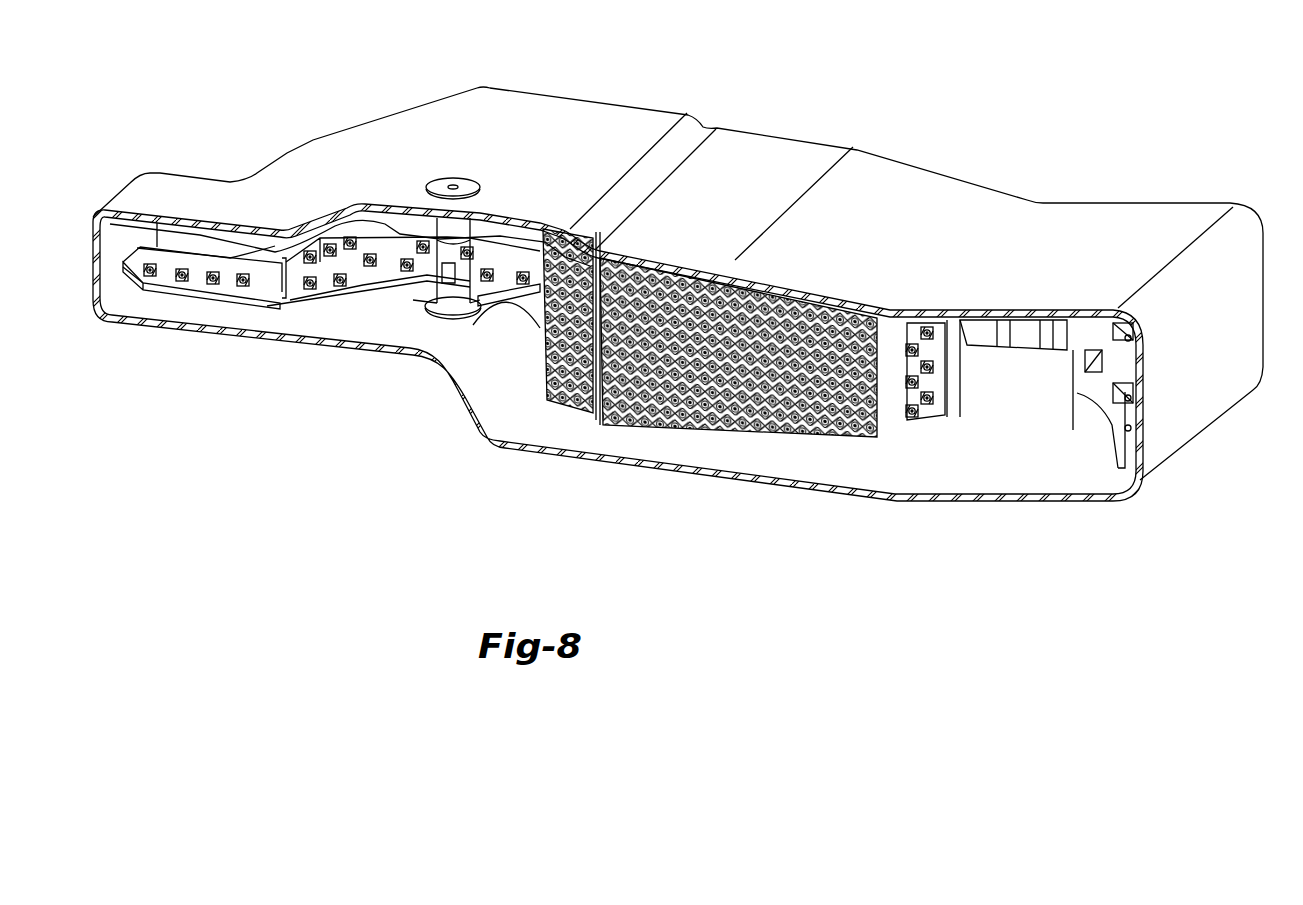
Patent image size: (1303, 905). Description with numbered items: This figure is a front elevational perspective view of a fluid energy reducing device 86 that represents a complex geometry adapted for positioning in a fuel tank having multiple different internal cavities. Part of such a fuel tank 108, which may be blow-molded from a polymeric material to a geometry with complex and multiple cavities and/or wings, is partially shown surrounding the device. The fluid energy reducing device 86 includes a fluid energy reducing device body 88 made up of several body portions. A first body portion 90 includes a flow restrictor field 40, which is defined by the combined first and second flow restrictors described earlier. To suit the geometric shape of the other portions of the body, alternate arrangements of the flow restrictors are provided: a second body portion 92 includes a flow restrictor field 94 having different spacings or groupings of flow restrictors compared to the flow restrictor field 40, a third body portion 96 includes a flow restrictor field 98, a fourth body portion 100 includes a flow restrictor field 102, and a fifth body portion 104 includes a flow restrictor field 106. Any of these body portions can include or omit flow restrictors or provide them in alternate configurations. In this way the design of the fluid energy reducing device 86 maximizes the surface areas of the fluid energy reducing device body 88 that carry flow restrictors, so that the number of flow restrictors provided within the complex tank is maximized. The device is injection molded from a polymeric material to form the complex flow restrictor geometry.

The fluid energy reducing device 86 is at (1015, 118).
The fuel tank 108 is at (500, 105).
The flow restrictor field 106 is at (254, 371).
The fifth body portion 104 is at (233, 288).
The fourth body portion 100 is at (445, 303).
The flow restrictor field 102 is at (464, 433).
The flow restrictor field 98 is at (529, 322).
The third body portion 96 is at (566, 405).
The flow restrictor field 40 is at (880, 547).
The fluid energy reducing device body 88 is at (917, 423).
The first body portion 90 is at (893, 400).
The second body portion 92 is at (1103, 380).
The flow restrictor field 94 is at (1145, 422).